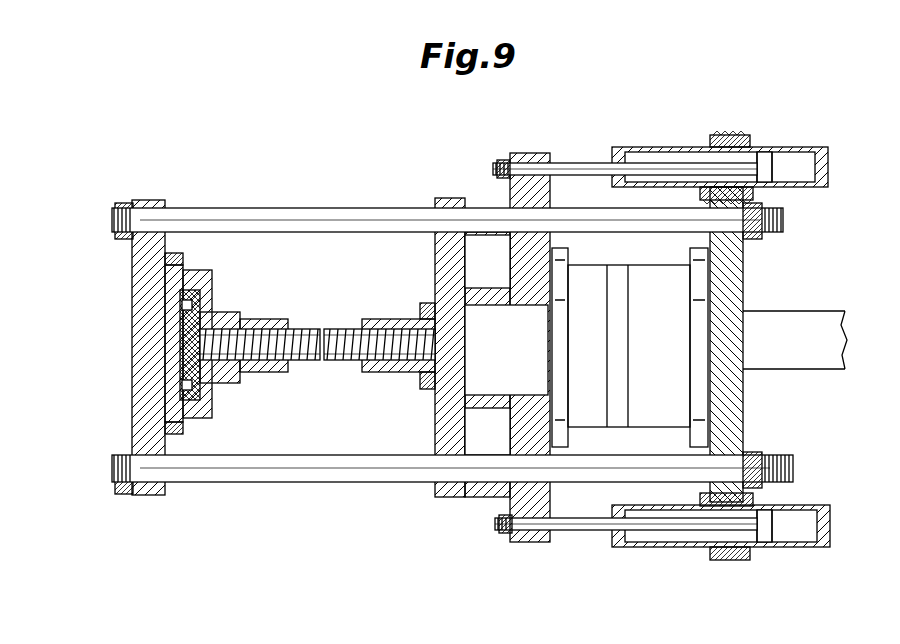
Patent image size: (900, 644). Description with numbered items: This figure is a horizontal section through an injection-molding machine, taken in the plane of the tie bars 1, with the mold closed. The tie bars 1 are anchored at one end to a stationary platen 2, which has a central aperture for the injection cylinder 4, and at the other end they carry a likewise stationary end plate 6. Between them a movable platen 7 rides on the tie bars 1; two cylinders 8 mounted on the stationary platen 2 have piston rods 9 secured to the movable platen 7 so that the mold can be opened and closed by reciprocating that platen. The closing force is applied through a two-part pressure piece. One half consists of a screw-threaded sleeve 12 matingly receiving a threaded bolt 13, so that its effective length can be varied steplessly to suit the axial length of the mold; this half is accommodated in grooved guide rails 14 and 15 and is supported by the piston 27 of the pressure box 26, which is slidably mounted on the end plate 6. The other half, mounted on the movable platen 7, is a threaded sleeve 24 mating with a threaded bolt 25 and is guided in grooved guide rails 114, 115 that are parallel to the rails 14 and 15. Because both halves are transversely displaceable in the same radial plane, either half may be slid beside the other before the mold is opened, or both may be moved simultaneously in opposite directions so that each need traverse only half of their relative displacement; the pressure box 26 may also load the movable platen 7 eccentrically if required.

The tie bars 1 is at (229, 222).
The stationary platen 2 is at (733, 258).
The injection cylinder 4 is at (822, 330).
The end plate 6 is at (161, 207).
The movable platen 7 is at (456, 198).
The cylinders 8 is at (746, 136).
The piston rods 9 is at (597, 170).
The screw-threaded sleeve 12 is at (260, 322).
The threaded bolt 13 is at (296, 335).
The grooved guiding rail 14 is at (176, 256).
The grooved guiding rail 15 is at (174, 443).
The threaded sleeve 24 is at (385, 322).
The threaded bolt 25 is at (338, 330).
The pressure box 26 is at (172, 306).
The piston 27 is at (174, 328).
The grooved guide rail 114 is at (424, 390).
The grooved guide rail 115 is at (426, 304).